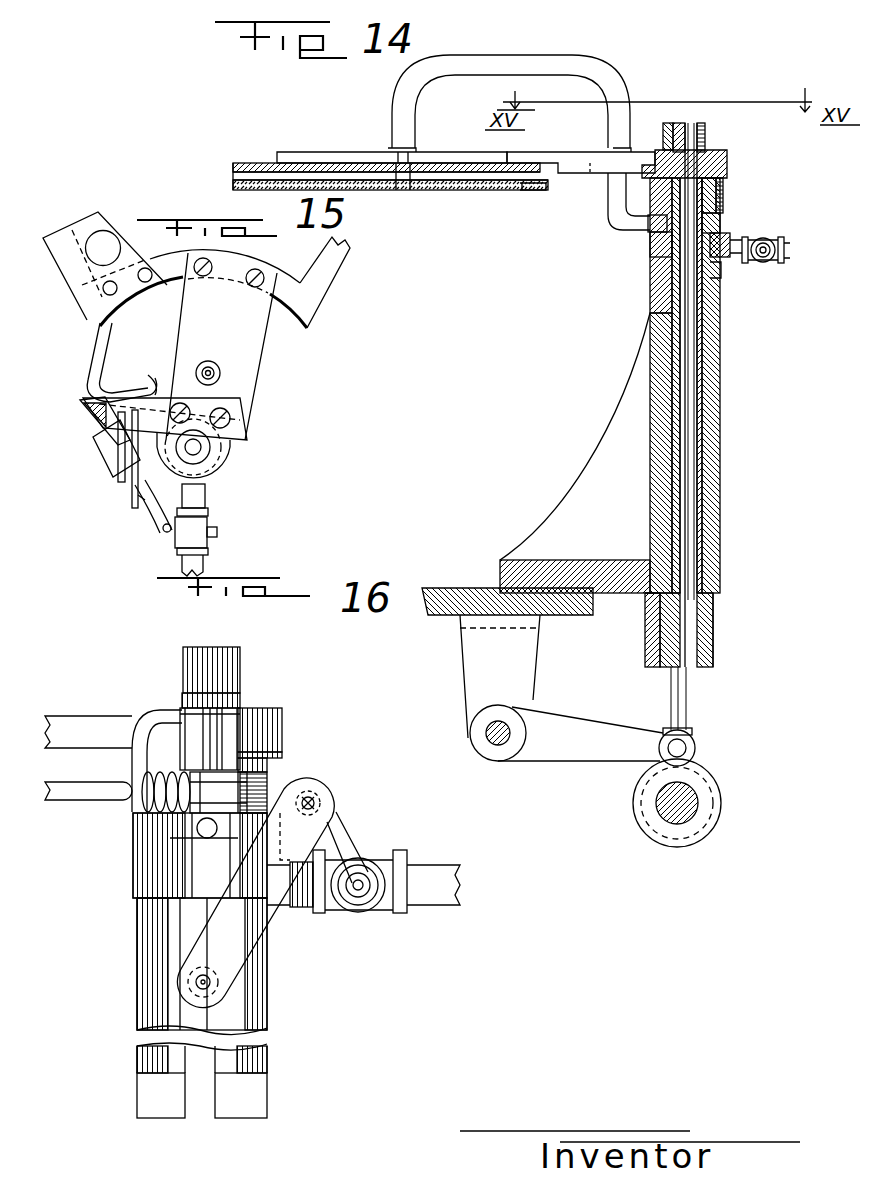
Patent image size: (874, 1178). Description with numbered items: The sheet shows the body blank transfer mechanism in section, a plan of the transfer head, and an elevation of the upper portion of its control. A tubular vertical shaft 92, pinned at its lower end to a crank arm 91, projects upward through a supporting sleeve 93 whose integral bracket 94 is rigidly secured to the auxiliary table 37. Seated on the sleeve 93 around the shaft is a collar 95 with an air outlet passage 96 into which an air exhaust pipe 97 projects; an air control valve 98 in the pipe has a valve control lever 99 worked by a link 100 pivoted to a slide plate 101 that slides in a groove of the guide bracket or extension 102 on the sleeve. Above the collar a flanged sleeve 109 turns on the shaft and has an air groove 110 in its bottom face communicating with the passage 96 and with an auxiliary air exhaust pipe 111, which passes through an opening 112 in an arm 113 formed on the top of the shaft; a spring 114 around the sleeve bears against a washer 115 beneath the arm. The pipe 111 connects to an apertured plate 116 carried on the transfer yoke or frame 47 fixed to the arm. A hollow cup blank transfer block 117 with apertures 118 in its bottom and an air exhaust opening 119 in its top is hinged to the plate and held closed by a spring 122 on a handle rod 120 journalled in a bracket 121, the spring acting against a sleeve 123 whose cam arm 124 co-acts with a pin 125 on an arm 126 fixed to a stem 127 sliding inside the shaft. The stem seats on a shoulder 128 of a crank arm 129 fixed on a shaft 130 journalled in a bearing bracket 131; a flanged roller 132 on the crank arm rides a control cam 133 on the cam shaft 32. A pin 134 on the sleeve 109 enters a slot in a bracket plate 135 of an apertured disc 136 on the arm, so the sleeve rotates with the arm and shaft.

In FIG. 14, the cam shaft 32 is at (690, 800).
In FIG. 14, the auxiliary table 37 is at (507, 592).
In FIG. 15, the cup blank transfer yoke or frame 47 is at (310, 290).
In FIG. 14, the crank arm 91 is at (705, 657).
In FIG. 14, the tubular vertical shaft 92 is at (690, 592).
In FIG. 14, the supporting sleeve 93 is at (706, 552).
In FIG. 16, the supporting sleeve 93 is at (137, 1060).
In FIG. 14, the bracket 94 is at (603, 473).
In FIG. 14, the collar 95 is at (708, 300).
In FIG. 16, the collar 95 is at (152, 955).
In FIG. 14, the air outlet passage 96 is at (721, 262).
In FIG. 14, the air exhaust pipe 97 is at (764, 231).
In FIG. 15, the air exhaust pipe 97 is at (200, 565).
In FIG. 16, the air exhaust pipe 97 is at (447, 885).
In FIG. 14, the air control valve 98 is at (777, 252).
In FIG. 15, the air control valve 98 is at (198, 527).
In FIG. 16, the air control valve 98 is at (378, 862).
In FIG. 15, the valve control lever 99 is at (163, 526).
In FIG. 16, the valve control lever 99 is at (340, 855).
In FIG. 15, the link 100 is at (150, 492).
In FIG. 16, the link 100 is at (245, 922).
In FIG. 15, the slide plate 101 is at (127, 442).
In FIG. 16, the slide plate 101 is at (227, 1060).
In FIG. 15, the guide bracket or extension 102 is at (135, 495).
In FIG. 16, the guide bracket or extension 102 is at (255, 1100).
In FIG. 14, the flanged sleeve 109 is at (742, 218).
In FIG. 15, the flanged sleeve 109 is at (230, 445).
In FIG. 16, the flanged sleeve 109 is at (245, 885).
In FIG. 14, the air groove 110 is at (733, 240).
In FIG. 14, the auxiliary air exhaust pipe 111 is at (507, 62).
In FIG. 15, the auxiliary air exhaust pipe 111 is at (222, 378).
In FIG. 14, the opening 112 is at (592, 176).
In FIG. 15, the opening 112 is at (218, 366).
In FIG. 14, the arm 113 is at (572, 168).
In FIG. 15, the arm 113 is at (200, 345).
In FIG. 16, the arm 113 is at (72, 728).
In FIG. 14, the spring 114 is at (724, 205).
In FIG. 16, the spring 114 is at (252, 783).
In FIG. 14, the washer 115 is at (726, 186).
In FIG. 16, the washer 115 is at (268, 775).
In FIG. 14, the apertured plate 116 is at (318, 152).
In FIG. 15, the apertured plate 116 is at (85, 220).
In FIG. 14, the hollow cup blank transfer block 117 is at (258, 162).
In FIG. 14, the apertures 118 is at (470, 189).
In FIG. 14, the air exhaust opening 119 is at (404, 168).
In FIG. 14, the handle rod 120 is at (541, 192).
In FIG. 15, the handle rod 120 is at (83, 382).
In FIG. 16, the handle rod 120 is at (78, 792).
In FIG. 14, the bracket 121 is at (652, 160).
In FIG. 15, the bracket 121 is at (152, 388).
In FIG. 16, the bracket 121 is at (148, 712).
In FIG. 15, the spring 122 is at (100, 416).
In FIG. 16, the spring 122 is at (140, 815).
In FIG. 15, the sleeve 123 is at (135, 460).
In FIG. 16, the sleeve 123 is at (272, 760).
In FIG. 15, the cam arm 124 is at (118, 492).
In FIG. 16, the cam arm 124 is at (172, 838).
In FIG. 16, the pin 125 is at (216, 738).
In FIG. 14, the arm 126 is at (702, 126).
In FIG. 15, the arm 126 is at (223, 467).
In FIG. 16, the arm 126 is at (224, 678).
In FIG. 14, the rod or stem 127 is at (684, 430).
In FIG. 14, the shoulder 128 is at (690, 735).
In FIG. 14, the crank arm 129 is at (594, 748).
In FIG. 14, the shaft 130 is at (490, 742).
In FIG. 14, the bearing bracket 131 is at (478, 650).
In FIG. 14, the flanged roller 132 is at (700, 750).
In FIG. 14, the control cam 133 is at (712, 815).
In FIG. 16, the pin 134 is at (175, 873).
In FIG. 16, the bracket plate 135 is at (198, 838).
In FIG. 14, the apertured disc 136 is at (712, 160).
In FIG. 16, the apertured disc 136 is at (262, 740).